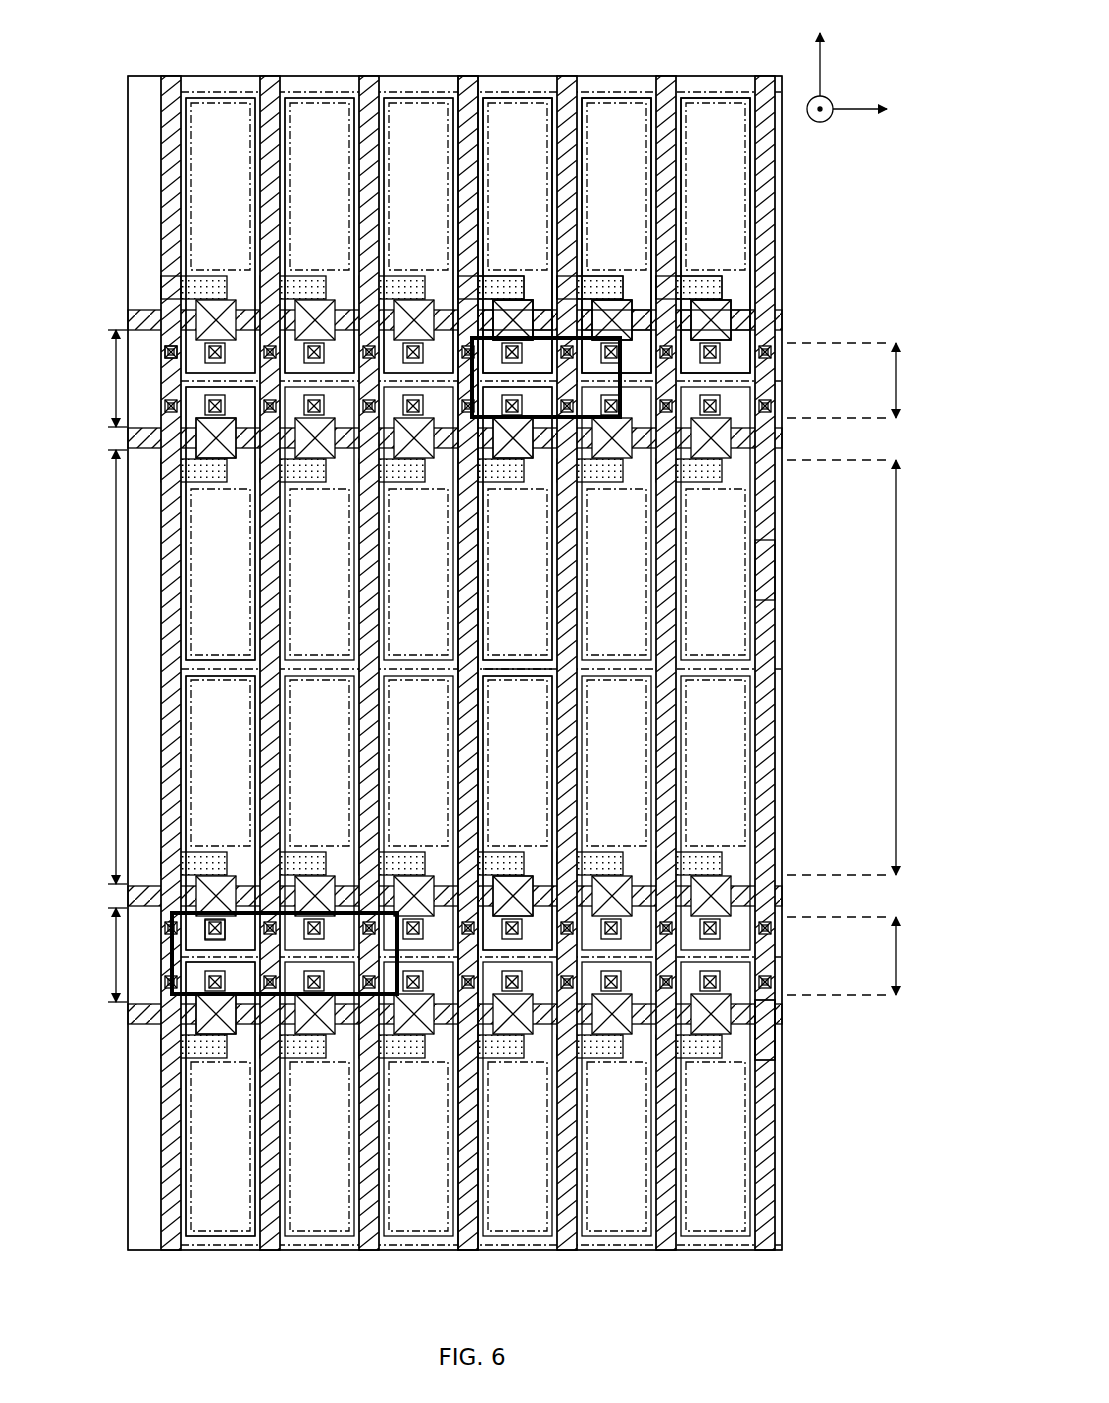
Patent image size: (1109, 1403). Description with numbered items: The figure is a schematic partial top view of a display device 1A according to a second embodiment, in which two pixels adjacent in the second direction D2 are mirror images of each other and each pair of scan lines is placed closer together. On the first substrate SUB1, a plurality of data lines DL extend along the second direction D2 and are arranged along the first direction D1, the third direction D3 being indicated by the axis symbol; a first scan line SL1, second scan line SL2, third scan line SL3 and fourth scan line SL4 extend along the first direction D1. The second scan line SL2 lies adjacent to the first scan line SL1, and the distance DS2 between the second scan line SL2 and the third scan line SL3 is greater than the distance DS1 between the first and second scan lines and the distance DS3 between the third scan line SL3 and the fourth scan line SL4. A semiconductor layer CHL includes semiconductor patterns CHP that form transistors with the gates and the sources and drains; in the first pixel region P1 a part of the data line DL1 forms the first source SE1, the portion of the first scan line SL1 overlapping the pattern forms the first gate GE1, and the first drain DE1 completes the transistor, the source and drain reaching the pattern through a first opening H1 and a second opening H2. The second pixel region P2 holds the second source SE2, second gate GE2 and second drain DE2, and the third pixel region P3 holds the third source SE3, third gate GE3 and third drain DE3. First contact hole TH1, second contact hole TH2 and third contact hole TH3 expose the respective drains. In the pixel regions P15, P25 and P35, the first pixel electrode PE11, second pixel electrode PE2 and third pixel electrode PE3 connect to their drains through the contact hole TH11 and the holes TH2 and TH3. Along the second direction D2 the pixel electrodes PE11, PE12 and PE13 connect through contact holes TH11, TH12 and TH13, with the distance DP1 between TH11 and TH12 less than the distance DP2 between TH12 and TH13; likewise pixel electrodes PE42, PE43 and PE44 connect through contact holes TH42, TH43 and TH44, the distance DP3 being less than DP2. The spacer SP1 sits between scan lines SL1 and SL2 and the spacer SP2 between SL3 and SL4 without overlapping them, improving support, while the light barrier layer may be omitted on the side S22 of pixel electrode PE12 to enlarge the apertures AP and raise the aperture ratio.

The first substrate SUB1 is at (128, 143).
The data line DL is at (172, 76).
The data line DL1 is at (468, 76).
The first pixel region P1 is at (222, 92).
The second pixel region P2 is at (321, 92).
The third pixel region P3 is at (410, 92).
The first pixel region P15 is at (505, 88).
The second pixel region P25 is at (645, 88).
The third pixel region P35 is at (738, 88).
The first pixel electrode PE11 is at (520, 100).
The second pixel electrode PE2 is at (615, 100).
The third pixel electrode PE3 is at (712, 100).
The first contact hole TH11 is at (484, 318).
The first source SE1 is at (481, 290).
The first gate GE1 is at (483, 322).
The first contact hole TH1 is at (528, 318).
The first drain DE1 is at (508, 330).
The second source SE2 is at (581, 290).
The second gate GE2 is at (583, 322).
The second contact hole TH2 is at (628, 318).
The second drain DE2 is at (608, 330).
The third source SE3 is at (680, 290).
The third gate GE3 is at (682, 322).
The third contact hole TH3 is at (727, 318).
The third drain DE3 is at (707, 330).
The second opening H2 is at (168, 300).
The first opening H1 is at (163, 352).
The first scan line SL1 is at (128, 320).
The second scan line SL2 is at (128, 440).
The third scan line SL3 is at (128, 897).
The fourth scan line SL4 is at (128, 1014).
The distance DS1 is at (113, 386).
The distance DS2 is at (113, 594).
The distance DS3 is at (113, 964).
The contact hole TH42 is at (200, 458).
The contact hole TH43 is at (246, 940).
The contact hole TH44 is at (200, 1030).
The first contact hole TH12 is at (518, 460).
The first contact hole TH13 is at (518, 874).
The pixel electrode PE42 is at (200, 525).
The pixel electrode PE43 is at (200, 733).
The pixel electrode PE44 is at (200, 1153).
The first pixel electrode PE12 is at (535, 605).
The first pixel electrode PE13 is at (540, 722).
The spacer SP1 is at (620, 392).
The spacer SP2 is at (172, 938).
The distance DP1 is at (890, 380).
The distance DP2 is at (892, 667).
The distance DP3 is at (892, 956).
The aperture AP is at (768, 573).
The side S22 is at (545, 667).
The semiconductor pattern CHP is at (765, 1040).
The semiconductor layer CHL is at (815, 1054).
The display device 1A is at (842, 1245).
The first direction D1 is at (876, 112).
The second direction D2 is at (824, 49).
The third direction D3 is at (823, 126).